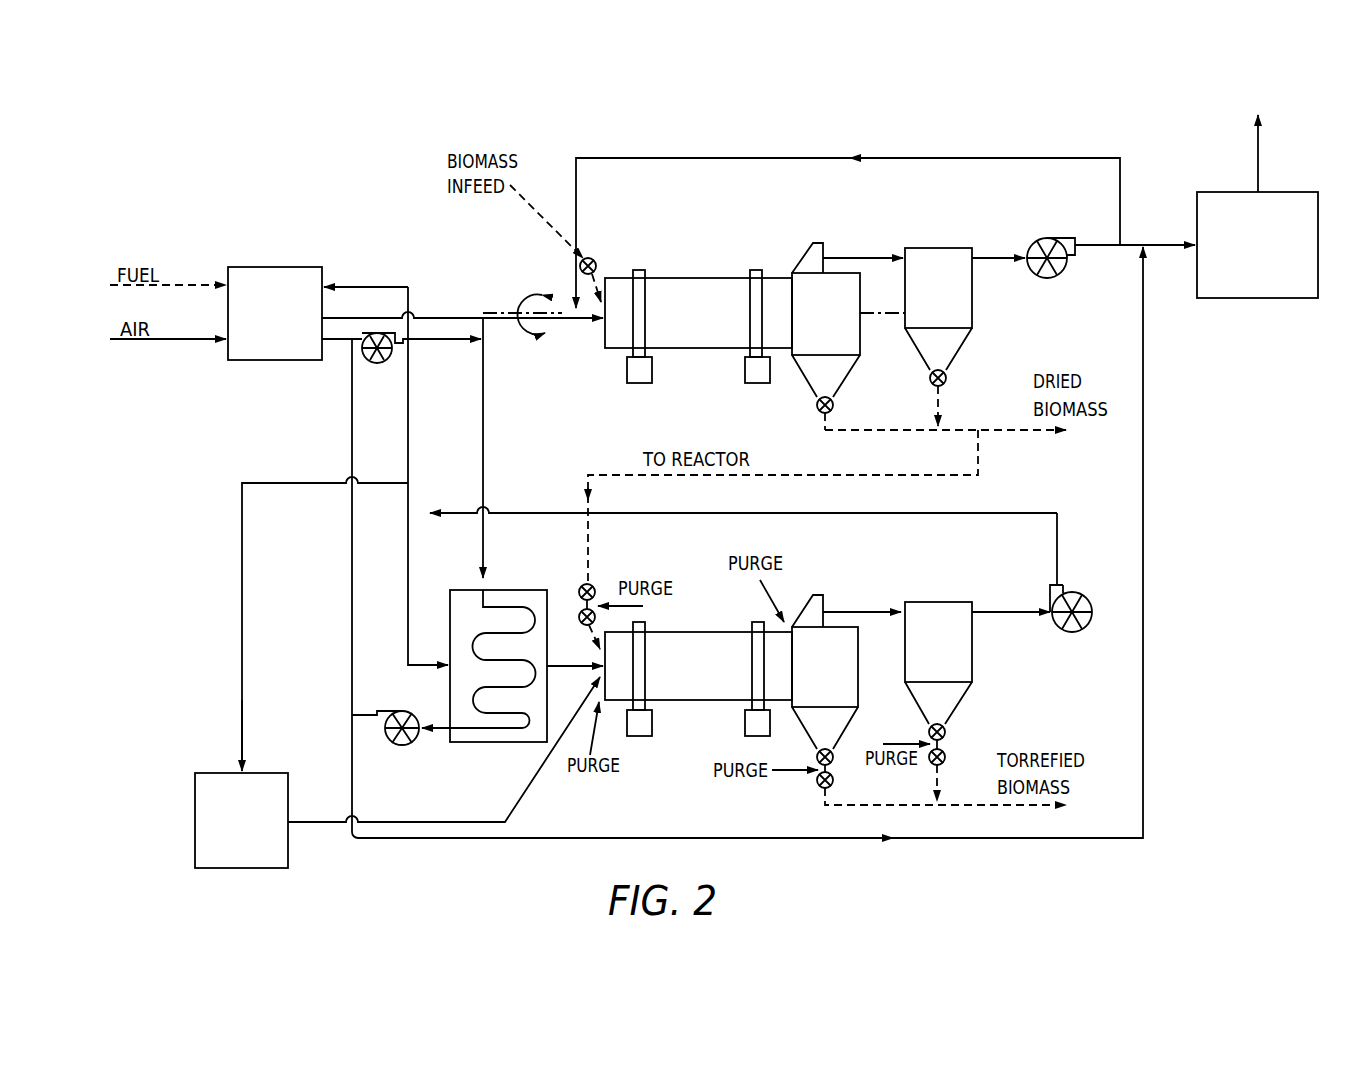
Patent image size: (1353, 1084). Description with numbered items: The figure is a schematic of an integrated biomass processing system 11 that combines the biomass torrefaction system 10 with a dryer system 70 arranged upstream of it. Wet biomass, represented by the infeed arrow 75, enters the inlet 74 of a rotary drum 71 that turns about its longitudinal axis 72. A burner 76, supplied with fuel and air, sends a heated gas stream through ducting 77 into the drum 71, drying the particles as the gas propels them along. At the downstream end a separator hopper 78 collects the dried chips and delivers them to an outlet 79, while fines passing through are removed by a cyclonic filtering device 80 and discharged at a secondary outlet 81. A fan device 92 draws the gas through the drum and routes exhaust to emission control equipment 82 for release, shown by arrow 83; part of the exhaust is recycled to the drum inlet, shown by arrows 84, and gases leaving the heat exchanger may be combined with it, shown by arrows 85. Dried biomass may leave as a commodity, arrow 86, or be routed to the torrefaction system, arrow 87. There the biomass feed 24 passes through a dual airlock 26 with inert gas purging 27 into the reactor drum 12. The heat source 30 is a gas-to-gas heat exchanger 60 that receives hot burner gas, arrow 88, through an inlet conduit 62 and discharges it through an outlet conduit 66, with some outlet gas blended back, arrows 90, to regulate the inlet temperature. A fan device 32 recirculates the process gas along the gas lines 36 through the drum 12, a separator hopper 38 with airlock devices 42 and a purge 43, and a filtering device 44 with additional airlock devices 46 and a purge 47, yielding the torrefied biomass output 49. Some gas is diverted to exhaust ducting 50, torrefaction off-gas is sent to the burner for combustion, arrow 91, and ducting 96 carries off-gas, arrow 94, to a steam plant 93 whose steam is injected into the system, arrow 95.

The biomass torrefaction system 10 is at (698, 701).
The integrated biomass processing system 11 is at (358, 150).
The reactor drum 12 is at (670, 632).
The biomass particles 24 is at (580, 548).
The dual airlock 26 is at (578, 612).
The inert gas purging 27 is at (608, 600).
The heat source 30 is at (458, 762).
The fan device 32 is at (1093, 612).
The gas line 36 is at (408, 620).
The separator hopper 38 is at (830, 640).
The airlock devices 42 is at (816, 752).
The purge gas flow 43 is at (800, 773).
The filtering device 44 is at (933, 632).
The additional airlock devices 46 is at (945, 757).
The purge gas flow 47 is at (918, 742).
The torrefied biomass outlet 49 is at (1063, 812).
The exhaust ducting 50 is at (407, 412).
The gas-to-gas heat exchanger 60 is at (520, 743).
The inlet conduit 62 is at (483, 530).
The outlet conduit 66 is at (443, 726).
The dryer system 70 is at (698, 287).
The rotary drum 71 is at (672, 287).
The longitudinal axis 72 is at (560, 322).
The inlet 74 is at (612, 254).
The biomass particles 75 is at (553, 222).
The burner 76 is at (278, 267).
The ducting 77 is at (465, 317).
The separator hopper 78 is at (810, 288).
The outlet 79 is at (846, 397).
The filtering device 80 is at (952, 248).
The secondary outlet 81 is at (959, 374).
The emission control equipment 82 is at (1275, 295).
The exhaust release 83 is at (1192, 243).
The recycled dryer exhaust 84 is at (850, 155).
The heat exchanger outlet gases 85 is at (352, 783).
The dried biomass output 86 is at (1066, 438).
The dried biomass to torrefaction 87 is at (593, 498).
The heated gas stream from burner 88 is at (490, 576).
The blended recirculation gases 90 is at (352, 462).
The torrefaction exhaust to burner 91 is at (330, 285).
The fan device 92 is at (1057, 240).
The steam plant 93 is at (215, 773).
The reactor off-gas to boiler 94 is at (246, 766).
The steam injection 95 is at (598, 676).
The ducting 96 is at (240, 552).